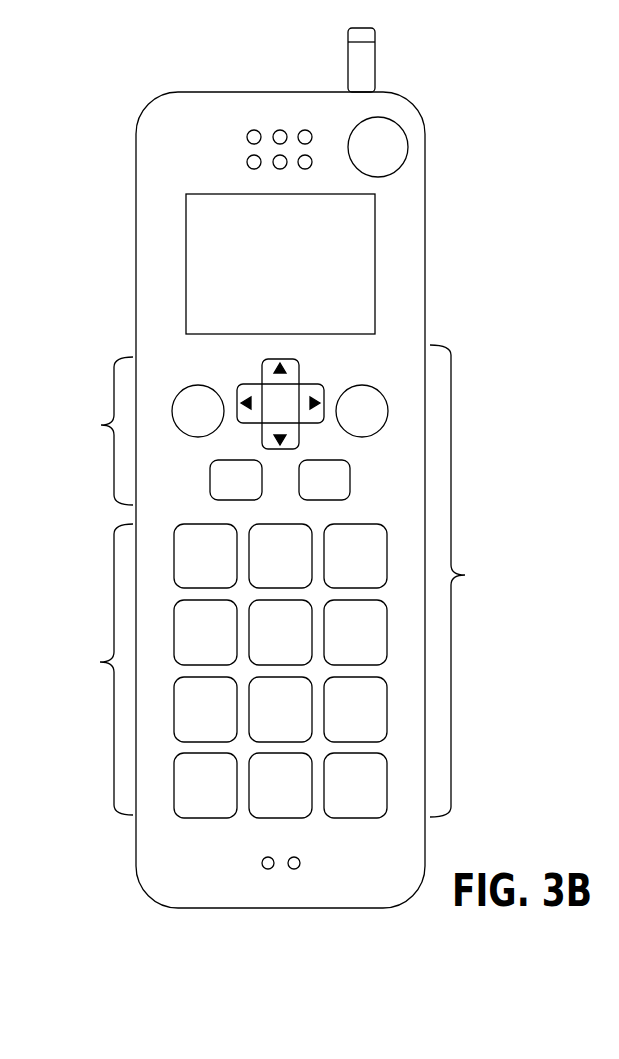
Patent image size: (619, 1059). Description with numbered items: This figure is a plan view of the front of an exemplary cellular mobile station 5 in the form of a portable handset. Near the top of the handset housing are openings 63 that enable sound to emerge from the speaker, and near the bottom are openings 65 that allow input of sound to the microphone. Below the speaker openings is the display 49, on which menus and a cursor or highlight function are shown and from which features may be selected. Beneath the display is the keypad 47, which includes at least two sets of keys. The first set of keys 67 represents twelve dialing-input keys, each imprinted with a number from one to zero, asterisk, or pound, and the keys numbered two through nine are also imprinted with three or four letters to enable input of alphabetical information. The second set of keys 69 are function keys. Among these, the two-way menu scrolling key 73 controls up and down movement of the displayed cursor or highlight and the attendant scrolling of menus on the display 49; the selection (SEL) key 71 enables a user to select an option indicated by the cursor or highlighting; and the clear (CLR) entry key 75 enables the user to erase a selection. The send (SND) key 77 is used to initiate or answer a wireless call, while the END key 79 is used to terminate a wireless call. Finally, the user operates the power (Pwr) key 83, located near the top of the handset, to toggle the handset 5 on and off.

The mobile station 5 is at (138, 111).
The keypad 47 is at (463, 581).
The display 49 is at (224, 194).
The openings 63 is at (266, 128).
The openings 65 is at (282, 872).
The first set of keys 67 is at (228, 671).
The second set of keys 69 is at (101, 431).
The selection (SEL) key 71 is at (372, 388).
The menu scrolling key 73 is at (315, 378).
The clear (CLR) entry key 75 is at (212, 388).
The send (SND) key 77 is at (212, 469).
The END key 79 is at (349, 468).
The power (Pwr) key 83 is at (357, 125).